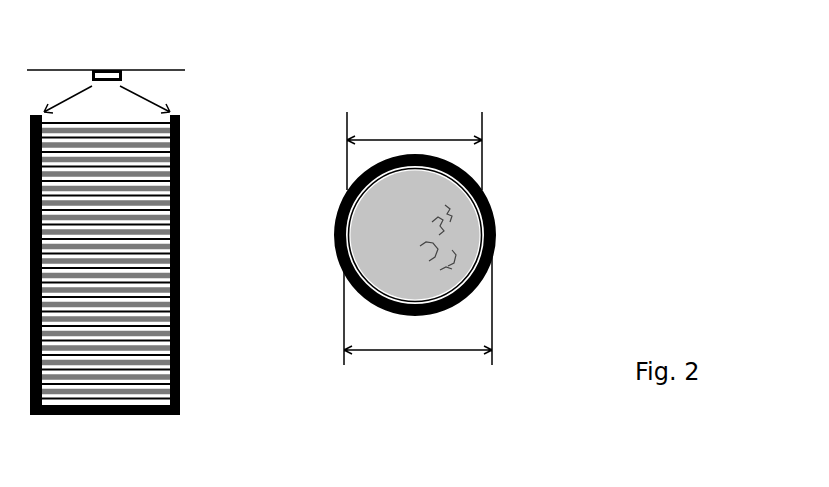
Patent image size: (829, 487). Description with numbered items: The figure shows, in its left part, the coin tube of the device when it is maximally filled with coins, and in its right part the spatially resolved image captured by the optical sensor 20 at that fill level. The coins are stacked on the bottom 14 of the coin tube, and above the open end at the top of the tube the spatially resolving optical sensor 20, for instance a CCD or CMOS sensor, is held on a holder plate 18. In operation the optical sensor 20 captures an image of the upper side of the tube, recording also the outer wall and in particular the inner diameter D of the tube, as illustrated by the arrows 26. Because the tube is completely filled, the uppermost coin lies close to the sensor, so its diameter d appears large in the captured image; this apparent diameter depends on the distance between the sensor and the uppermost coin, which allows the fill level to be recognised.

The bottom 14 is at (512, 0).
The holder plate 18 is at (142, 70).
The optical sensor 20 is at (107, 70).
The arrows 26 is at (145, 97).
The diameter of the uppermost coin appearing in the image d is at (412, 140).
The inner diameter of the coin tube D is at (412, 352).